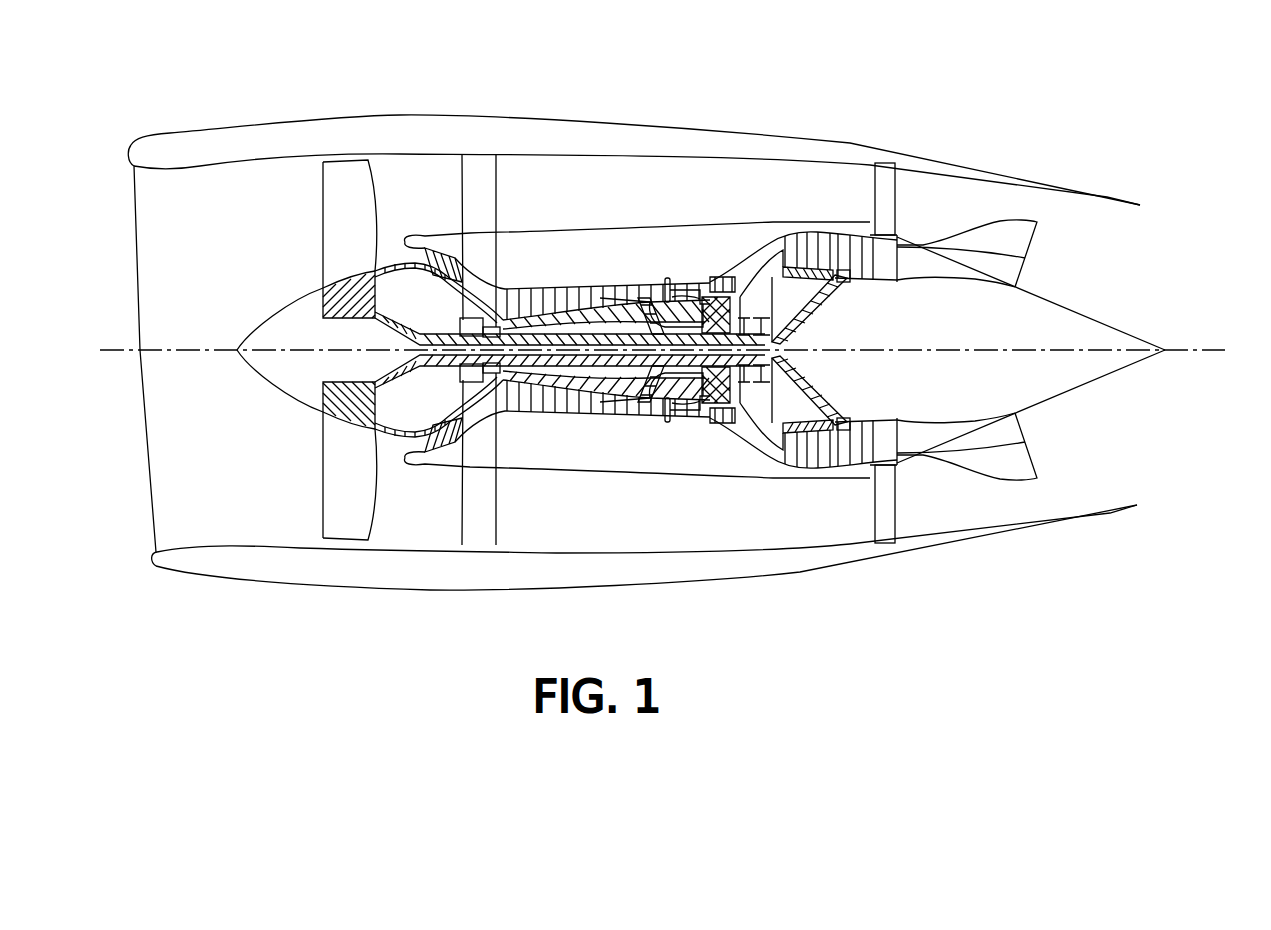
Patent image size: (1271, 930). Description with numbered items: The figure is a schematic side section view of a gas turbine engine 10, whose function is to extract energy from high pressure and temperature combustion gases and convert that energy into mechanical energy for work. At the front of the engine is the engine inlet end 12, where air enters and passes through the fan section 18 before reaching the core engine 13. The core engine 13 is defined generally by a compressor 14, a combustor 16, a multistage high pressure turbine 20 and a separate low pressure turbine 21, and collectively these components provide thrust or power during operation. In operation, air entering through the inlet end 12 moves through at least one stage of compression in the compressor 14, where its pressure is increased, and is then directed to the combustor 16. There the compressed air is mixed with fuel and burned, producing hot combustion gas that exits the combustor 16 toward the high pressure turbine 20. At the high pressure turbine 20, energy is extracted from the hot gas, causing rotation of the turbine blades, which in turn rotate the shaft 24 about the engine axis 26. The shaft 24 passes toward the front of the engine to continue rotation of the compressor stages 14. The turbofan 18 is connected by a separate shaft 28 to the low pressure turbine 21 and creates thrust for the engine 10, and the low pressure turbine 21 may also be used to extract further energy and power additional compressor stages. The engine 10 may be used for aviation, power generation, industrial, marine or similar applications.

The gas turbine engine 10 is at (906, 84).
The engine inlet end 12 is at (162, 198).
The core engine 13 is at (614, 224).
The compressor 14 is at (538, 286).
The combustor 16 is at (681, 276).
The fan section 18 is at (312, 226).
The high pressure turbine 20 is at (729, 272).
The low pressure turbine 21 is at (843, 288).
The shaft 24 is at (663, 390).
The engine axis 26 is at (1208, 350).
The shaft 28 is at (594, 386).